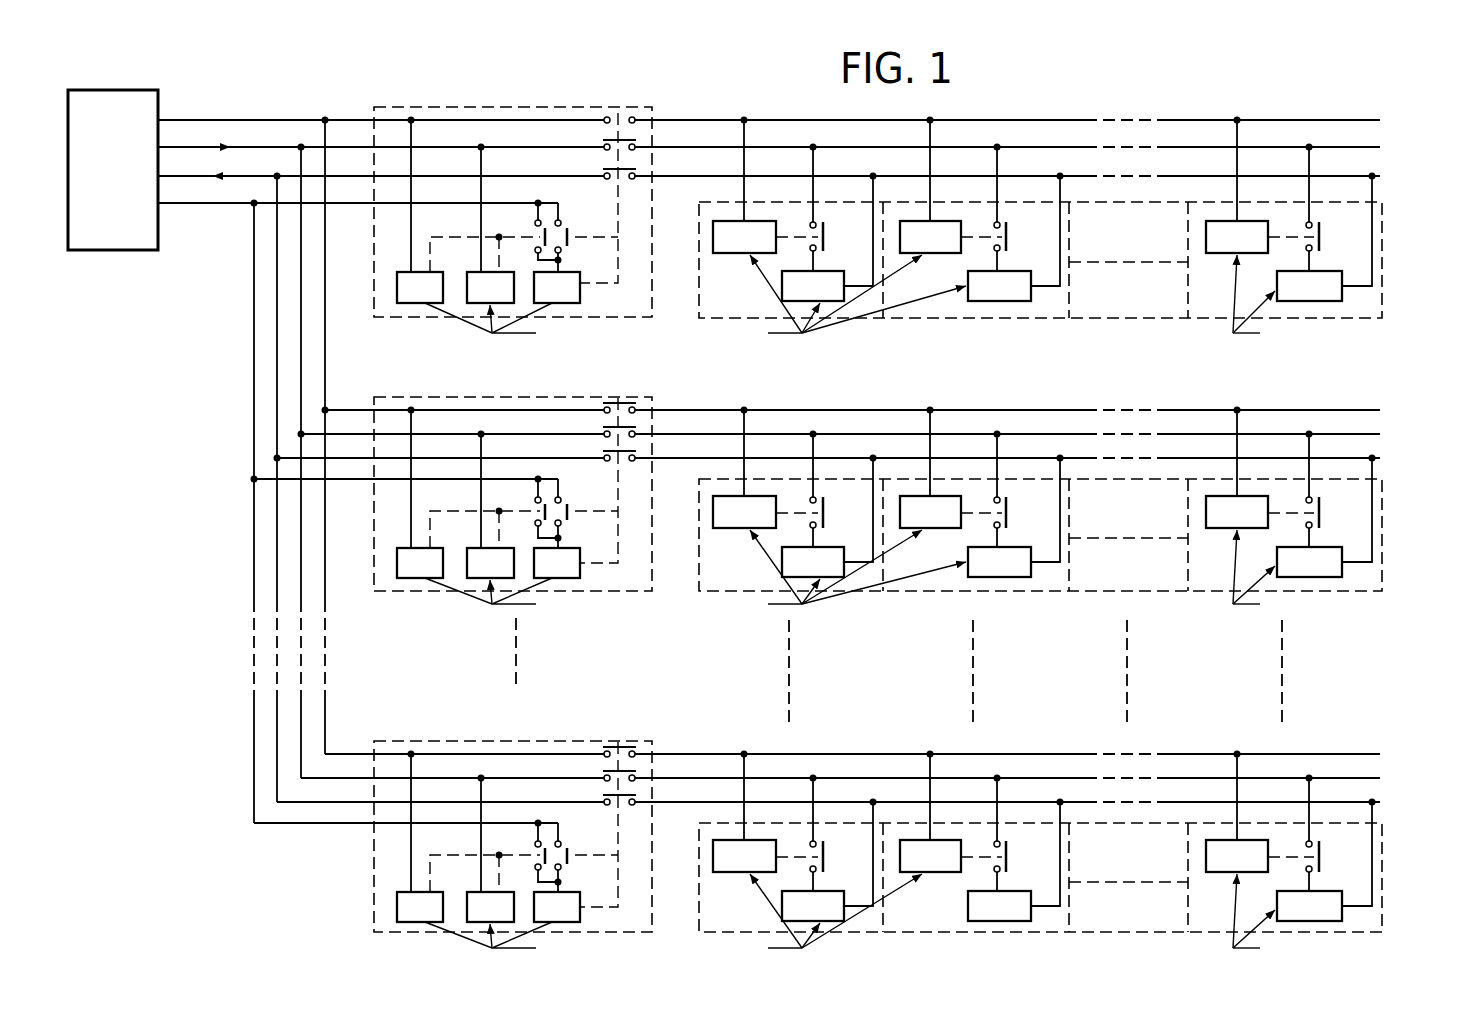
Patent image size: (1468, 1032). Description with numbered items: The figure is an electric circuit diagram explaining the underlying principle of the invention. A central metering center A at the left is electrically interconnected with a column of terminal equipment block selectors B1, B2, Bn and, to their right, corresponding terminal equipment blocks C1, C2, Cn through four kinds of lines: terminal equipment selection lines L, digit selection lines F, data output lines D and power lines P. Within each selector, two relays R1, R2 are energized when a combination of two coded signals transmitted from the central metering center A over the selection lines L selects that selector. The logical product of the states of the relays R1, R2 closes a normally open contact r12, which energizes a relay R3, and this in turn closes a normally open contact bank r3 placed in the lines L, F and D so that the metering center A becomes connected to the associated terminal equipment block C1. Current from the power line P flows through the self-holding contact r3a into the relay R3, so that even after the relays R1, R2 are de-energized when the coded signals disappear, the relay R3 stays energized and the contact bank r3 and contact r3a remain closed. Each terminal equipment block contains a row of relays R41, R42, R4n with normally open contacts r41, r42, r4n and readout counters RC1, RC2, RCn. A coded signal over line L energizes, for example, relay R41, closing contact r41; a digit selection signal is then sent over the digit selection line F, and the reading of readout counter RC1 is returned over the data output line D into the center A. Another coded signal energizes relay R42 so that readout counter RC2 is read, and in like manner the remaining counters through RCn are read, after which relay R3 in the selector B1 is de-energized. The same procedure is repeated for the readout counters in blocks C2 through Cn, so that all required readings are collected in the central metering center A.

The central metering center A is at (124, 251).
The terminal equipment block selector B1 is at (652, 108).
The terminal equipment block selector B2 is at (652, 398).
The terminal equipment block selector Bn is at (652, 742).
The terminal equipment block C1 is at (1382, 248).
The terminal equipment block C2 is at (1382, 528).
The terminal equipment block Cn is at (1382, 835).
The terminal equipment selection line L is at (769, 425).
The digit selection line F is at (769, 450).
The data output line D is at (769, 477).
The power line P is at (358, 501).
The relay R1 is at (420, 520).
The relay R2 is at (490, 533).
The relay R3 is at (557, 597).
The normally open contact r12 is at (496, 546).
The self-holding contact r3a is at (592, 536).
The normally open contact bank r3 is at (610, 510).
The relay R41 is at (744, 495).
The relay R42 is at (930, 495).
The relay R4n is at (1237, 495).
The normally open contact r41 is at (815, 518).
The normally open contact r42 is at (1000, 518).
The normally open contact r4n is at (1311, 518).
The readout counter RC1 is at (829, 547).
The readout counter RC2 is at (1016, 547).
The readout counter RCn is at (1326, 547).